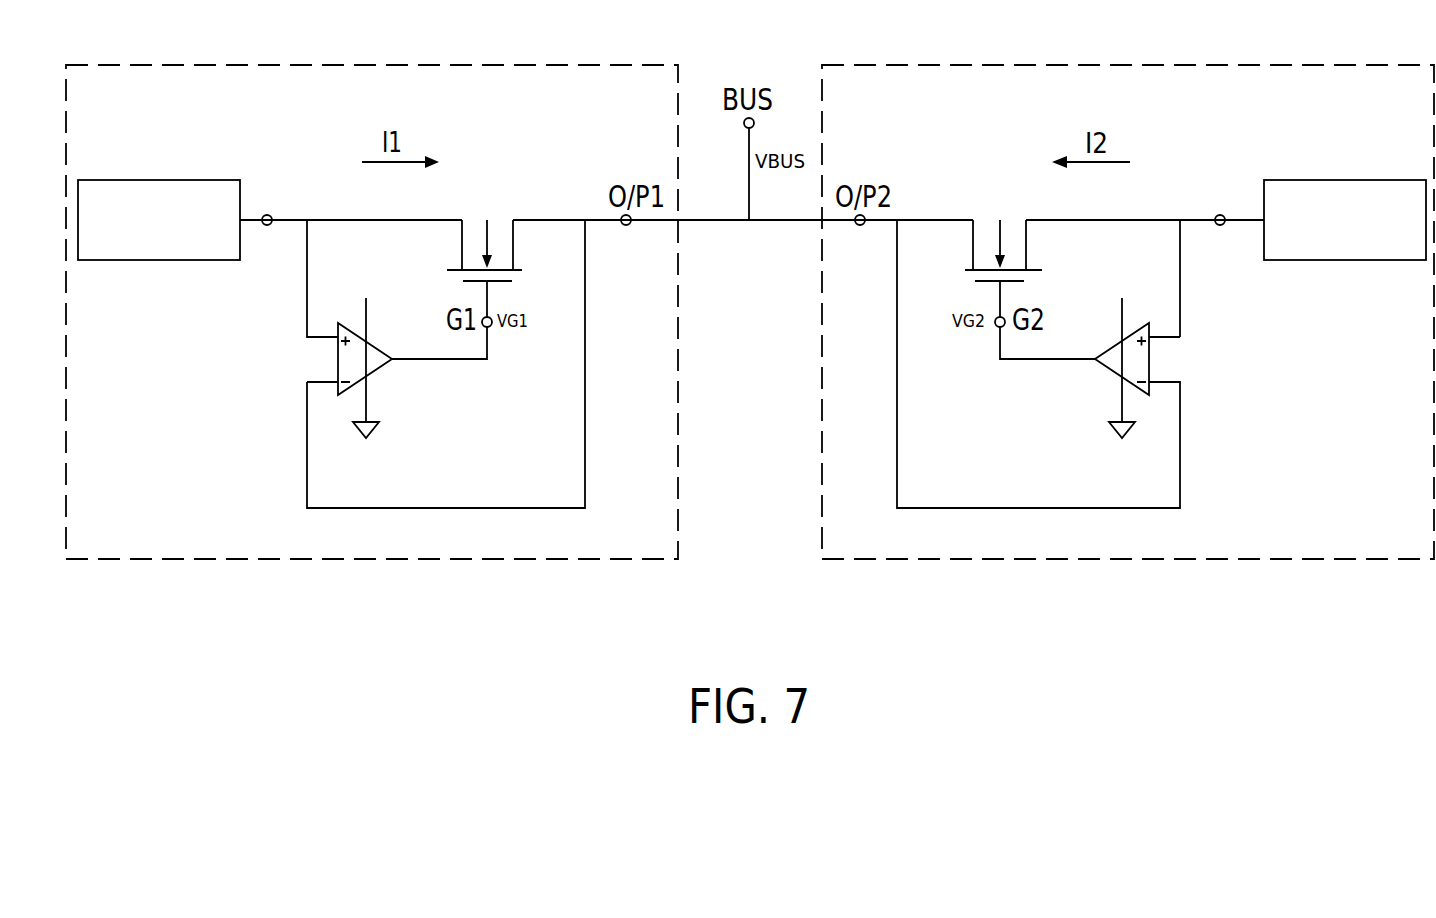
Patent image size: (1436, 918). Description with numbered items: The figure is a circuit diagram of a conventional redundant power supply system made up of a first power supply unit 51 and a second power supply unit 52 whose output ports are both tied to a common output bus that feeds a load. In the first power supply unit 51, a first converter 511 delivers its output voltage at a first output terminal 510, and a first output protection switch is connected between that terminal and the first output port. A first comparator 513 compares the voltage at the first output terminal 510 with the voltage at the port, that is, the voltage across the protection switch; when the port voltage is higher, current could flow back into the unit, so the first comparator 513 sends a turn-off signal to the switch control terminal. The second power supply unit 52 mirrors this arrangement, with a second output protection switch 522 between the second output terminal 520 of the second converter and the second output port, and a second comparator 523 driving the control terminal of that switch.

The first power supply unit 51 is at (377, 63).
The second power supply unit 52 is at (1120, 63).
The first converter 511 is at (147, 180).
The first output terminal 510 is at (266, 218).
The first comparator 513 is at (365, 345).
The second output protection switch 522 is at (1003, 232).
The second comparator 523 is at (1122, 345).
The second output terminal 520 is at (1221, 217).